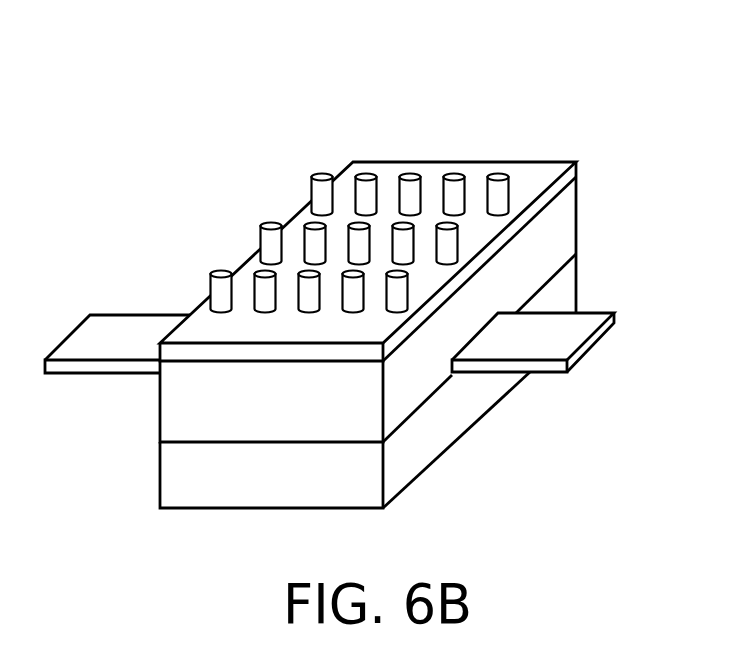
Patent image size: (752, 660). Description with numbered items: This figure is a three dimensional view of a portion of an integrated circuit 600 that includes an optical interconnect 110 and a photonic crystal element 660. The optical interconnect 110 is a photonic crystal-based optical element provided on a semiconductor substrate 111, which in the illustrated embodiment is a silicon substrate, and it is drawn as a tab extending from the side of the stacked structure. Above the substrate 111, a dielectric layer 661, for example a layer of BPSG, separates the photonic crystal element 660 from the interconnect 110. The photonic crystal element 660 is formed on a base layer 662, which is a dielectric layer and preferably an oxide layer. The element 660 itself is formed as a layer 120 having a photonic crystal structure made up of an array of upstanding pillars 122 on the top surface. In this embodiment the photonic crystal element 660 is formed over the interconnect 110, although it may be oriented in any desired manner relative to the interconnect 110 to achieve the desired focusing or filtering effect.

The integrated circuit 600 is at (627, 94).
The base layer 662 is at (578, 172).
The dielectric layer 661 is at (160, 407).
The semiconductor substrate 111 is at (263, 485).
The optical interconnect 110 is at (73, 332).
The photonic crystal element 660 is at (180, 208).
The layer 120 is at (180, 265).
The pillars 122 is at (267, 223).